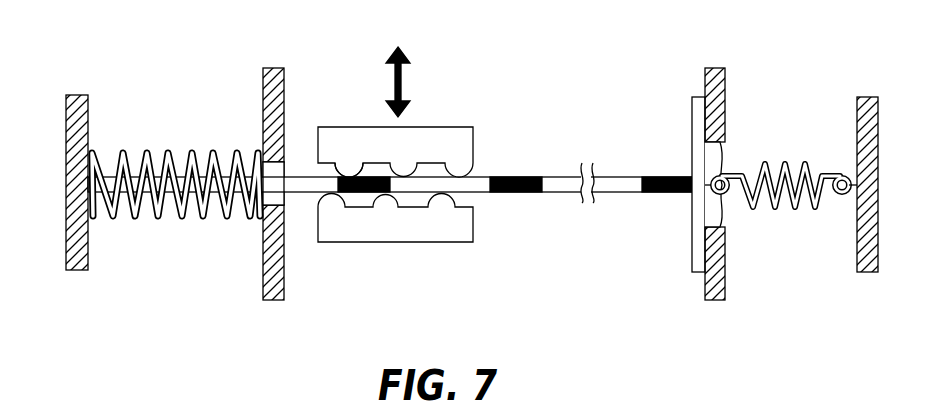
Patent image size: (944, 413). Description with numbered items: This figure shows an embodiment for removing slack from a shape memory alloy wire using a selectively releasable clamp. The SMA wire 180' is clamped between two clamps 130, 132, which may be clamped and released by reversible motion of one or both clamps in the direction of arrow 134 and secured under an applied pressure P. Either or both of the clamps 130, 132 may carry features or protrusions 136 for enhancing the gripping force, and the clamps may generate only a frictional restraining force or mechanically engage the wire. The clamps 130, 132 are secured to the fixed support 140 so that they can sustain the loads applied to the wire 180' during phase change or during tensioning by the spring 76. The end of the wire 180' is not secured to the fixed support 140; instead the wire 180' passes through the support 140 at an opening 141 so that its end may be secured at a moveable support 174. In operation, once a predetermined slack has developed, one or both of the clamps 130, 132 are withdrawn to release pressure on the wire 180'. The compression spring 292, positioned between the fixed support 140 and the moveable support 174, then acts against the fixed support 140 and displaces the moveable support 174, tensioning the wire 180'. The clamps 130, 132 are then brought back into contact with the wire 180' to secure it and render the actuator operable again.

The moveable support 174 is at (70, 160).
The compression spring 292 is at (120, 157).
The opening 141 is at (268, 168).
The fixed support 140 is at (265, 120).
The protrusions 136 is at (333, 176).
The arrow 134 is at (403, 73).
The clamp 130 is at (453, 127).
The clamp 132 is at (422, 242).
The SMA wire 180' is at (390, 188).
The spring 76 is at (762, 165).